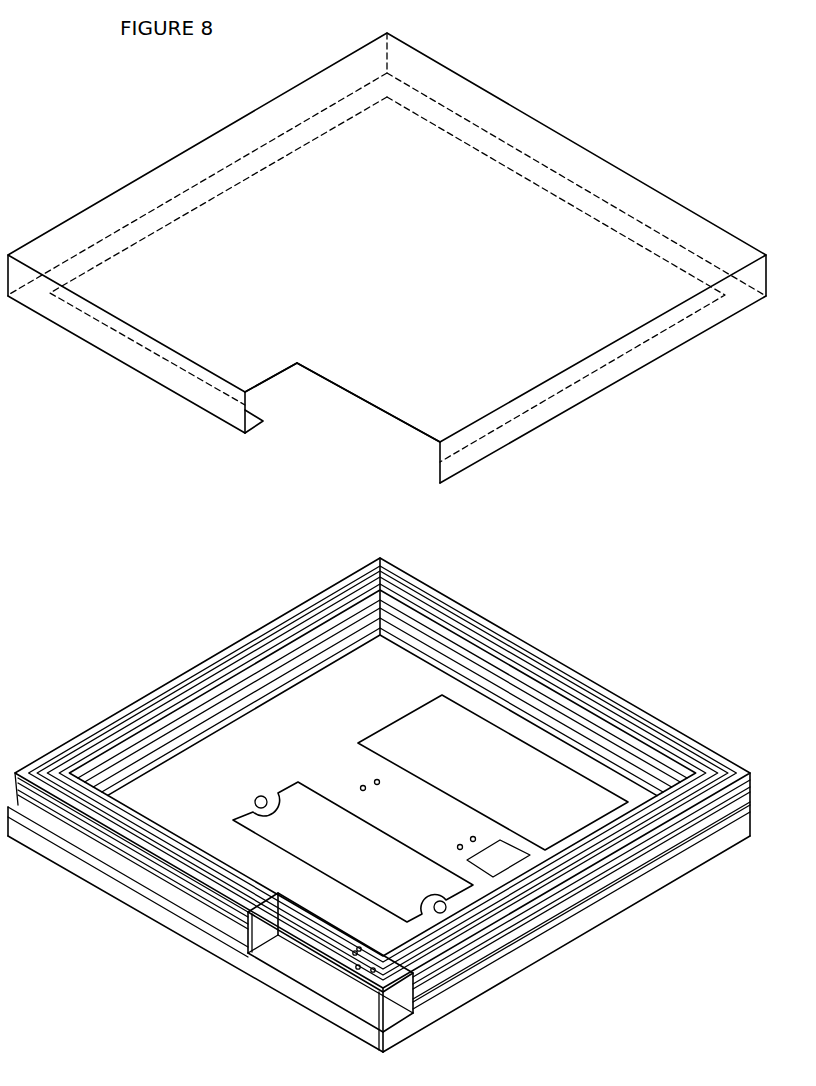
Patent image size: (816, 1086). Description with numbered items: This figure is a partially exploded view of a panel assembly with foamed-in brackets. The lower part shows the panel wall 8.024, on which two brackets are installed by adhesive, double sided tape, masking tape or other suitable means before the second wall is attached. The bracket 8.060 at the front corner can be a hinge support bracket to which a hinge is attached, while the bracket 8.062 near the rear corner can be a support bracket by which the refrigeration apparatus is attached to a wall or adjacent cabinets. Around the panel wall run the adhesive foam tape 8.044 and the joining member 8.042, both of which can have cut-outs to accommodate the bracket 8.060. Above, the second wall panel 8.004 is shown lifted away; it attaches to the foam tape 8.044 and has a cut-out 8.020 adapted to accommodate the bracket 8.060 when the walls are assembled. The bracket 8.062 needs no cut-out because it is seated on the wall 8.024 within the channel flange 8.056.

The second wall panel 8.004 is at (387, 247).
The cut-out 8.020 is at (353, 397).
The channel flange 8.056 is at (437, 474).
The joining member 8.042 is at (337, 622).
The panel wall 8.024 is at (285, 710).
The adhesive foam tape 8.044 is at (147, 693).
The support bracket 8.062 is at (713, 782).
The hinge support bracket 8.060 is at (312, 933).